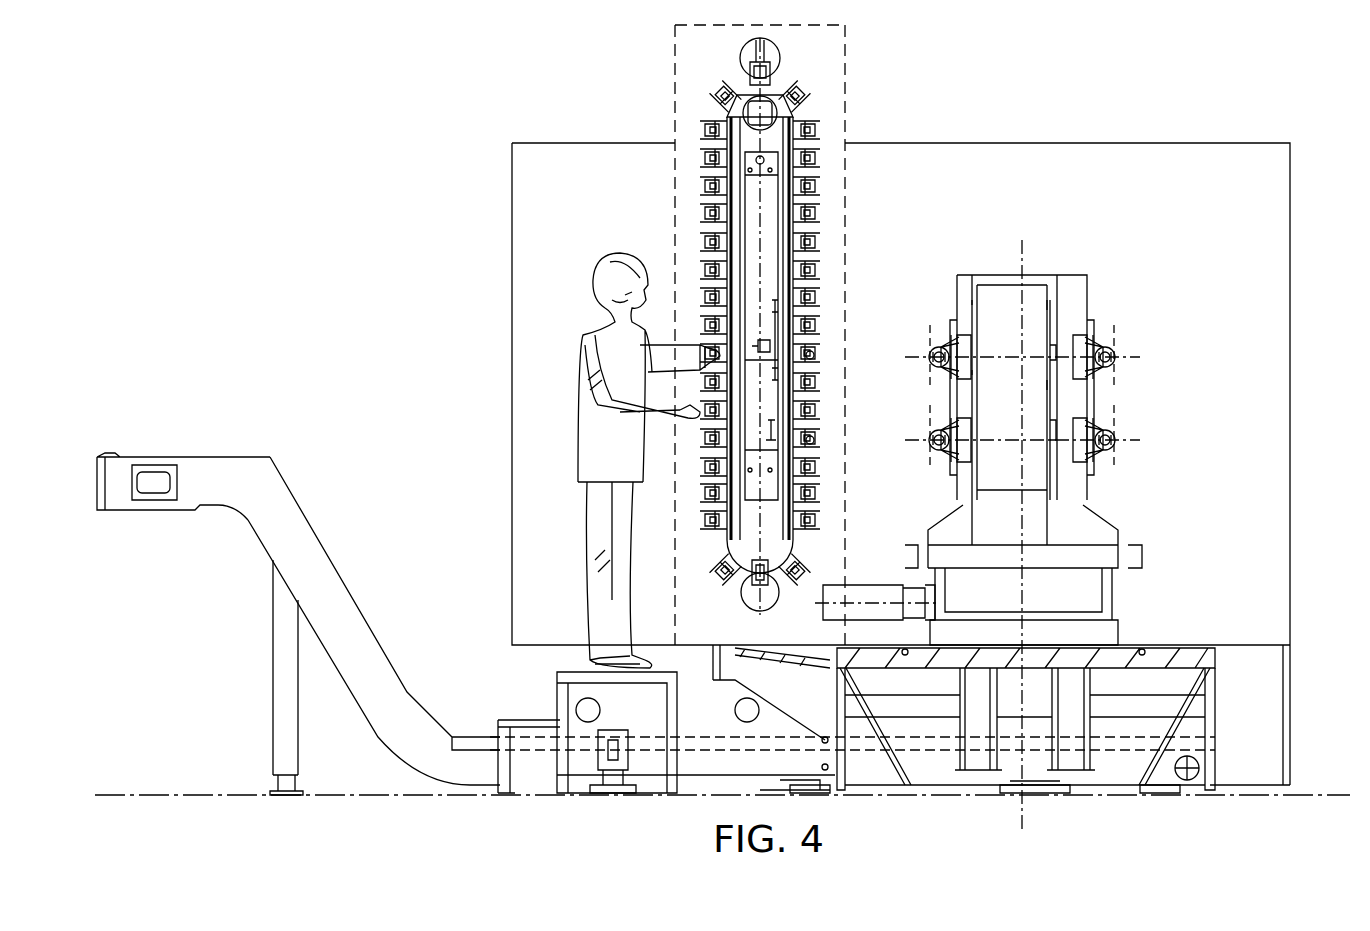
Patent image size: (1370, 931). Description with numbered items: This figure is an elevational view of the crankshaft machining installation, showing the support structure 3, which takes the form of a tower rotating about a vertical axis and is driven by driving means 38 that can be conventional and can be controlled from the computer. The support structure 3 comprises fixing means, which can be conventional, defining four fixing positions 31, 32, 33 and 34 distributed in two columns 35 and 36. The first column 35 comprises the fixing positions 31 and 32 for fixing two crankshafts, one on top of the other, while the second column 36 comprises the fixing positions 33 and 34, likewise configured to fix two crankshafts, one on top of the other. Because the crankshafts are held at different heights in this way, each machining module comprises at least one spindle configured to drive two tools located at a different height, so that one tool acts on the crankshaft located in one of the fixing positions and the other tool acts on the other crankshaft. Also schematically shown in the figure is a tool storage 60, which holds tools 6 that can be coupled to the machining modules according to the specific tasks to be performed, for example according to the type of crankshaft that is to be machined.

The tool storage 60 is at (850, 89).
The tools 6 is at (815, 408).
The support structure 3 is at (1005, 265).
The fixing position 31 is at (908, 343).
The fixing position 32 is at (908, 441).
The fixing position 33 is at (1137, 345).
The fixing position 34 is at (1137, 440).
The first column 35 is at (929, 313).
The second column 36 is at (1106, 288).
The driving means 38 is at (863, 597).